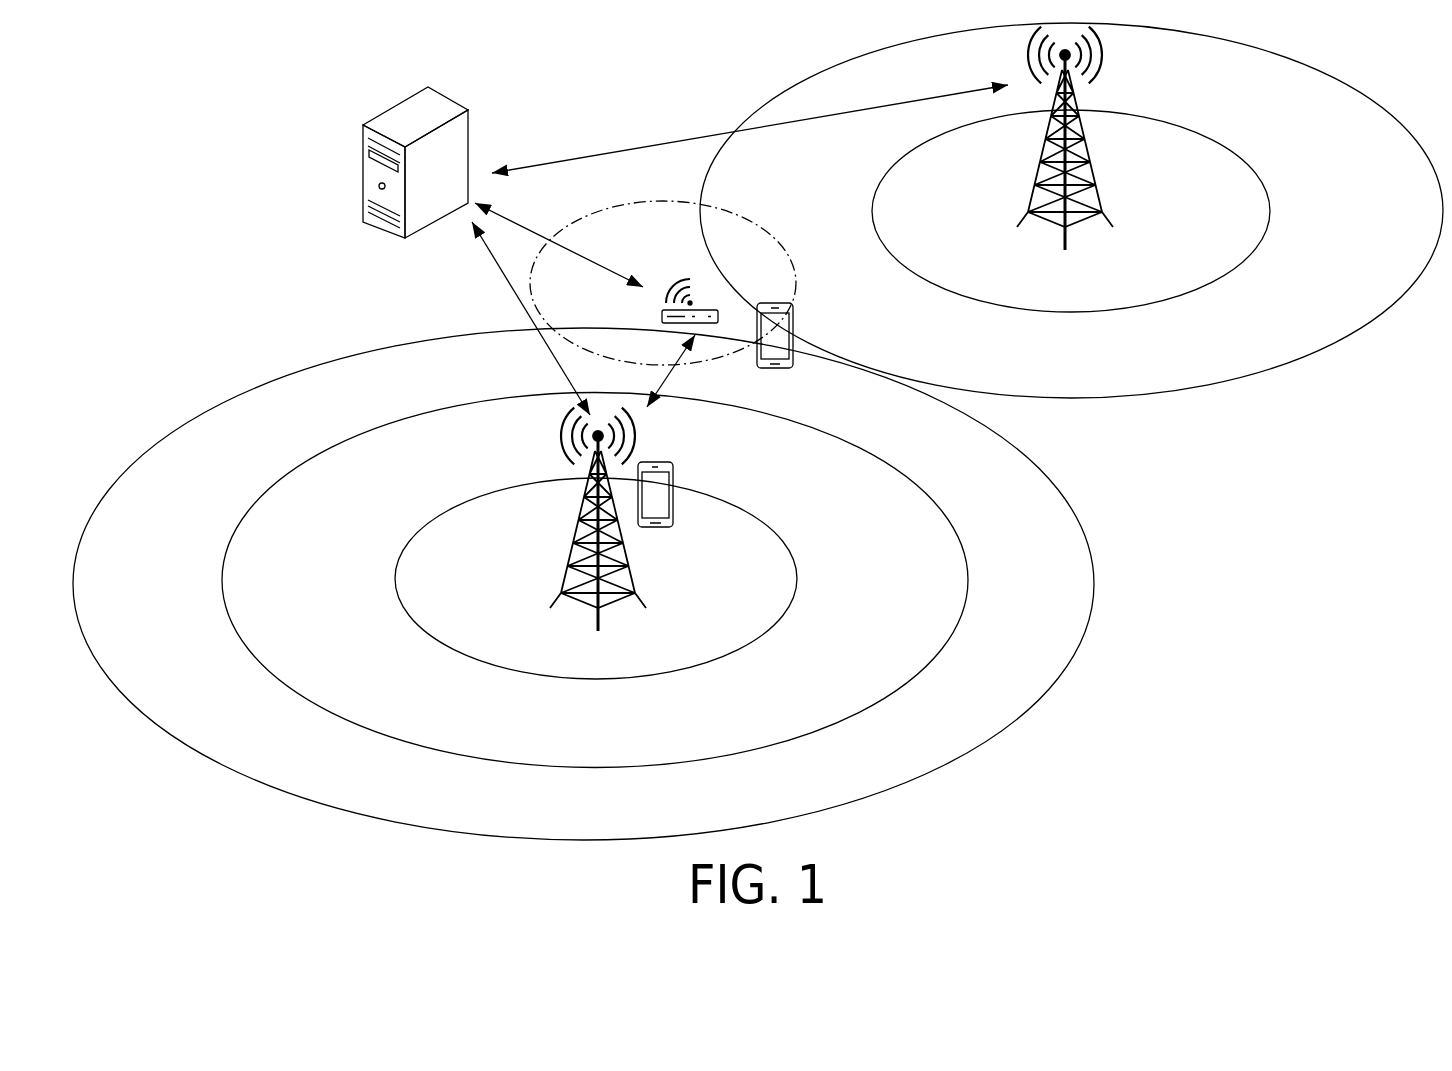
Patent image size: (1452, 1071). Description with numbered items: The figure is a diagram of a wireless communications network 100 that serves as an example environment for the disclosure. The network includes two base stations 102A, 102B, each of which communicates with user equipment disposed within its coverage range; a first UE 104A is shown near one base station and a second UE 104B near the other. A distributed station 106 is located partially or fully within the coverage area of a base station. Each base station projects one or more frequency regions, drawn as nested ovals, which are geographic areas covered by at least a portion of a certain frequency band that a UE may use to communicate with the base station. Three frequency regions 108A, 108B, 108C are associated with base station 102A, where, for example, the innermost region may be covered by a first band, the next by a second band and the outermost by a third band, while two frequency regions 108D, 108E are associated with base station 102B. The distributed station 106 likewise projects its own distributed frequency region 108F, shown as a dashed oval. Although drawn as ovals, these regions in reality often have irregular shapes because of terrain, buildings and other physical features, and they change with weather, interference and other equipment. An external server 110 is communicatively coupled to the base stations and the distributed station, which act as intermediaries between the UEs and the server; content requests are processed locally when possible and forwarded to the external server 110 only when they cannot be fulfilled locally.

The wireless communications network 100 is at (184, 174).
The base station 102A is at (560, 437).
The base station 102B is at (1028, 56).
The UE 104A is at (678, 475).
The UE 104B is at (796, 318).
The distributed station 106 is at (672, 268).
The frequency region 108A is at (668, 656).
The frequency region 108B is at (698, 729).
The frequency region 108C is at (732, 804).
The frequency region 108D is at (1150, 286).
The frequency region 108E is at (1172, 362).
The distributed frequency region 108F is at (613, 309).
The external server 110 is at (414, 95).